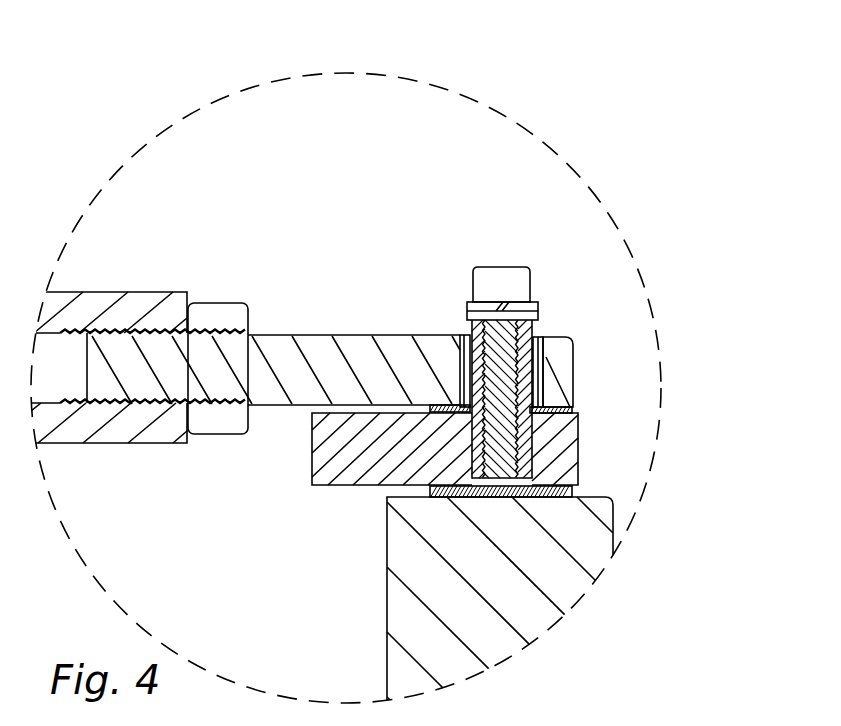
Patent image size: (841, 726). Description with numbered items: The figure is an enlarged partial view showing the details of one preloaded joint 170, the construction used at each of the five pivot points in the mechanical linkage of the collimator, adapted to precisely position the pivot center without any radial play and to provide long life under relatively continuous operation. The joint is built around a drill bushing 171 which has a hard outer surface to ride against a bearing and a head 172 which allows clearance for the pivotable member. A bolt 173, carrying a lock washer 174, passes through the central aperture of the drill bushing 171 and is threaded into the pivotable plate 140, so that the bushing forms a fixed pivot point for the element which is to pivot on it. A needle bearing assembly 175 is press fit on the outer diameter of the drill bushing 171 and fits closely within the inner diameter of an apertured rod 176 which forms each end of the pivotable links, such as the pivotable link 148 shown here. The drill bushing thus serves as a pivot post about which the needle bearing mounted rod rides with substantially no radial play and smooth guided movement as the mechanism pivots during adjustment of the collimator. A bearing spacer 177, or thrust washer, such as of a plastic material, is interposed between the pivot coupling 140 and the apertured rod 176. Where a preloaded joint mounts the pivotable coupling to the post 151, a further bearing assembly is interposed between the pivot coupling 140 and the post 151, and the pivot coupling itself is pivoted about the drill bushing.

The preloaded joint 170 is at (456, 163).
The pivotable link 148 is at (134, 289).
The head 172 is at (466, 326).
The bolt 173 is at (505, 282).
The lock washer 174 is at (535, 302).
The drill bushing 171 is at (540, 322).
The needle bearing assembly 175 is at (462, 335).
The apertured rod 176 is at (460, 377).
The bearing spacer 177 is at (405, 412).
The pivotable plate 140 is at (578, 445).
The post 151 is at (528, 612).